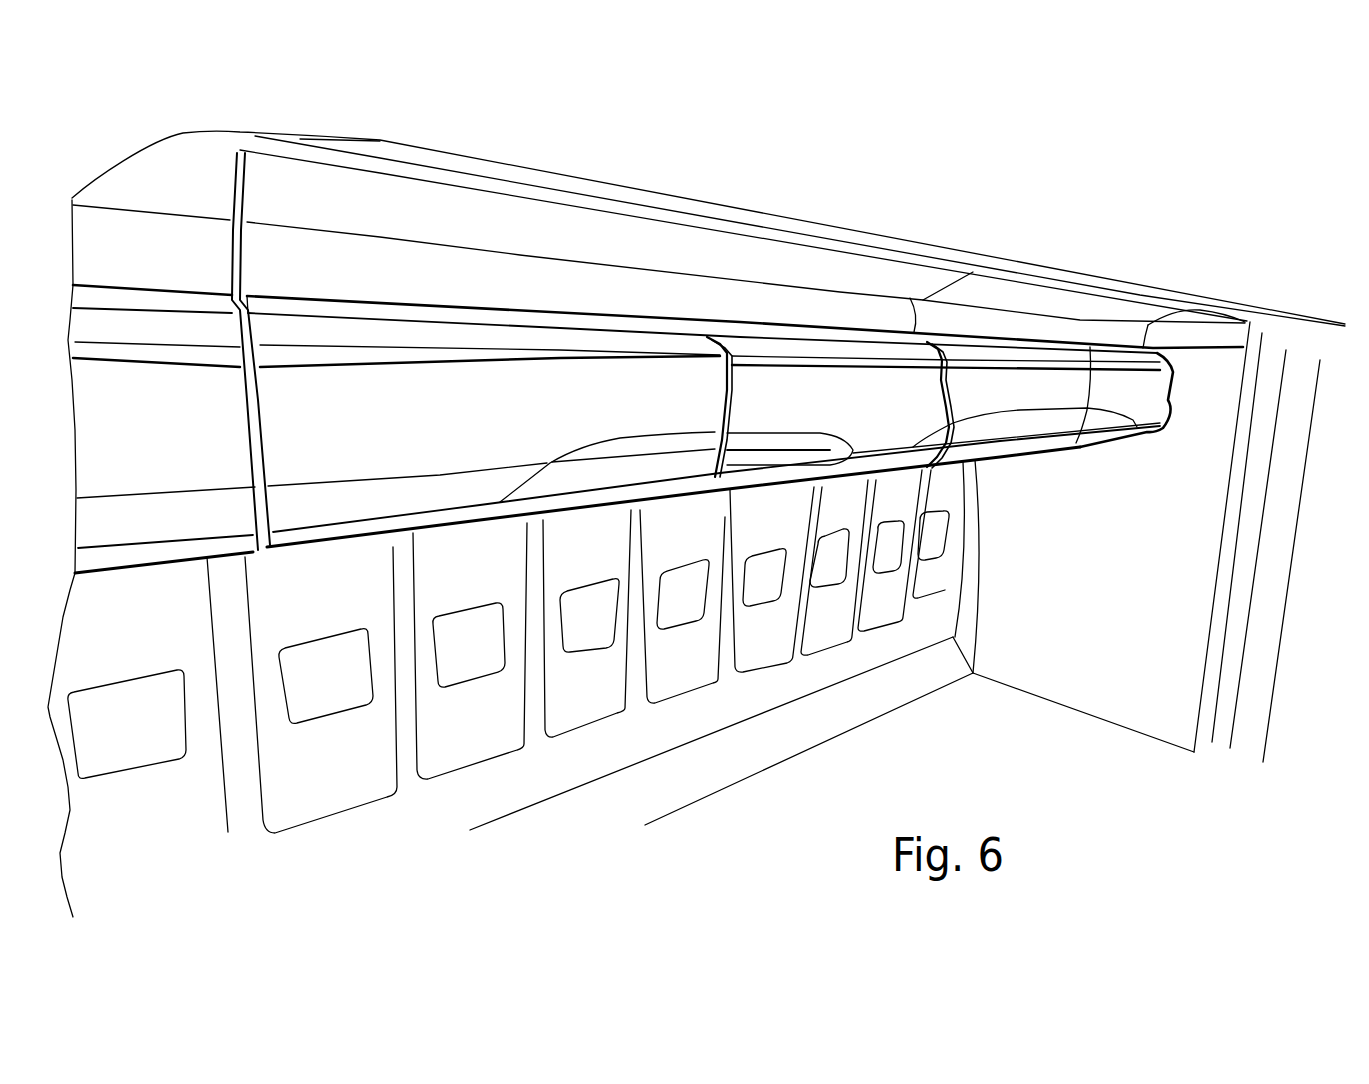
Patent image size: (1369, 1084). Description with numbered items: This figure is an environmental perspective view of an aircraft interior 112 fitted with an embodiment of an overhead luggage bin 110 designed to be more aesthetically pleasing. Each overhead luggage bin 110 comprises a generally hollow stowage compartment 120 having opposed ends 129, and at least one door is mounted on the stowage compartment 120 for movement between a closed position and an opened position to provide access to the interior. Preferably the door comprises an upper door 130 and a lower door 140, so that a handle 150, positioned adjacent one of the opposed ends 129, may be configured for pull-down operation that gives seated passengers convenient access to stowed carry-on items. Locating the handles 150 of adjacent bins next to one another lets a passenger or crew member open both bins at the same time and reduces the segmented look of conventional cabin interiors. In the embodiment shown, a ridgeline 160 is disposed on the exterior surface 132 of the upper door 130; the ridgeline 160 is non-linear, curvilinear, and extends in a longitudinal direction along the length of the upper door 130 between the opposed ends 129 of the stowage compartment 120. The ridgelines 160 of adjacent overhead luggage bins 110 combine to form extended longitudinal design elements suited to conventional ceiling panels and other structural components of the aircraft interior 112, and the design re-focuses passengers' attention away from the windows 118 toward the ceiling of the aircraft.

The overhead luggage bin 110 is at (348, 575).
The aircraft interior 112 is at (946, 770).
The windows 118 is at (833, 563).
The stowage compartment 120 is at (387, 300).
The opposed ends 129 is at (257, 448).
The upper door 130 is at (635, 400).
The exterior surface 132 is at (415, 441).
The lower door 140 is at (427, 490).
The handle 150 is at (770, 467).
The ridgeline 160 is at (483, 363).